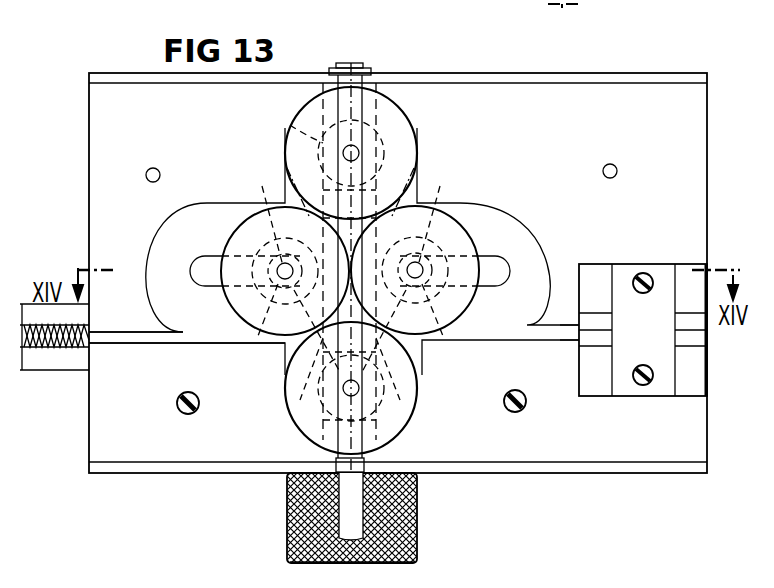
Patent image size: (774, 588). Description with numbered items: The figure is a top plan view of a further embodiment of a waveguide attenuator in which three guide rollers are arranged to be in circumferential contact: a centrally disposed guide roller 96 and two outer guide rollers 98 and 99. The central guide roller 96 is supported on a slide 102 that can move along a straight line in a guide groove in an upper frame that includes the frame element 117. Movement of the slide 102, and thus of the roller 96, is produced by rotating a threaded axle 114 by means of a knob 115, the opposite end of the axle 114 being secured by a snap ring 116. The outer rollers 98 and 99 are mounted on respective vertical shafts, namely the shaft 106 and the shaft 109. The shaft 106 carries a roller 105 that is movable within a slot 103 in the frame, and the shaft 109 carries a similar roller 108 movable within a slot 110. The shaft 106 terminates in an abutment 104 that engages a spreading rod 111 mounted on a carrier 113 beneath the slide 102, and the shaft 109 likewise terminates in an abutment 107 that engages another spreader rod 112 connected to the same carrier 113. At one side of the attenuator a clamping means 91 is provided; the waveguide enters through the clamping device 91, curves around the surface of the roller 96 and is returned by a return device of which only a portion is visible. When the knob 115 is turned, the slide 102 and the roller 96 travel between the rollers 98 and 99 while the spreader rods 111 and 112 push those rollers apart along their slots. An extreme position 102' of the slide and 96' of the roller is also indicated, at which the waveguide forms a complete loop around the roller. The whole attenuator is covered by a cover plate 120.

The clamping means 91 is at (690, 372).
The guide roller 96 is at (371, 388).
The extreme position of the roller 96' is at (369, 153).
The guide roller 98 is at (240, 303).
The guide roller 99 is at (462, 304).
The slide 102 is at (268, 412).
The extreme position of the slide 102' is at (275, 120).
The slot 103 is at (205, 270).
The abutment 104 is at (280, 216).
The roller 105 is at (258, 329).
The vertical shaft 106 is at (276, 262).
The abutment 107 is at (424, 216).
The roller 108 is at (450, 340).
The shaft 109 is at (422, 270).
The slot 110 is at (503, 270).
The spreading rod 111 is at (292, 380).
The spreader rod 112 is at (415, 369).
The carrier 113 is at (410, 386).
The threaded axle 114 is at (388, 450).
The knob 115 is at (287, 508).
The snap ring 116 is at (360, 70).
The upper frame element 117 is at (693, 209).
The cover plate 120 is at (688, 432).